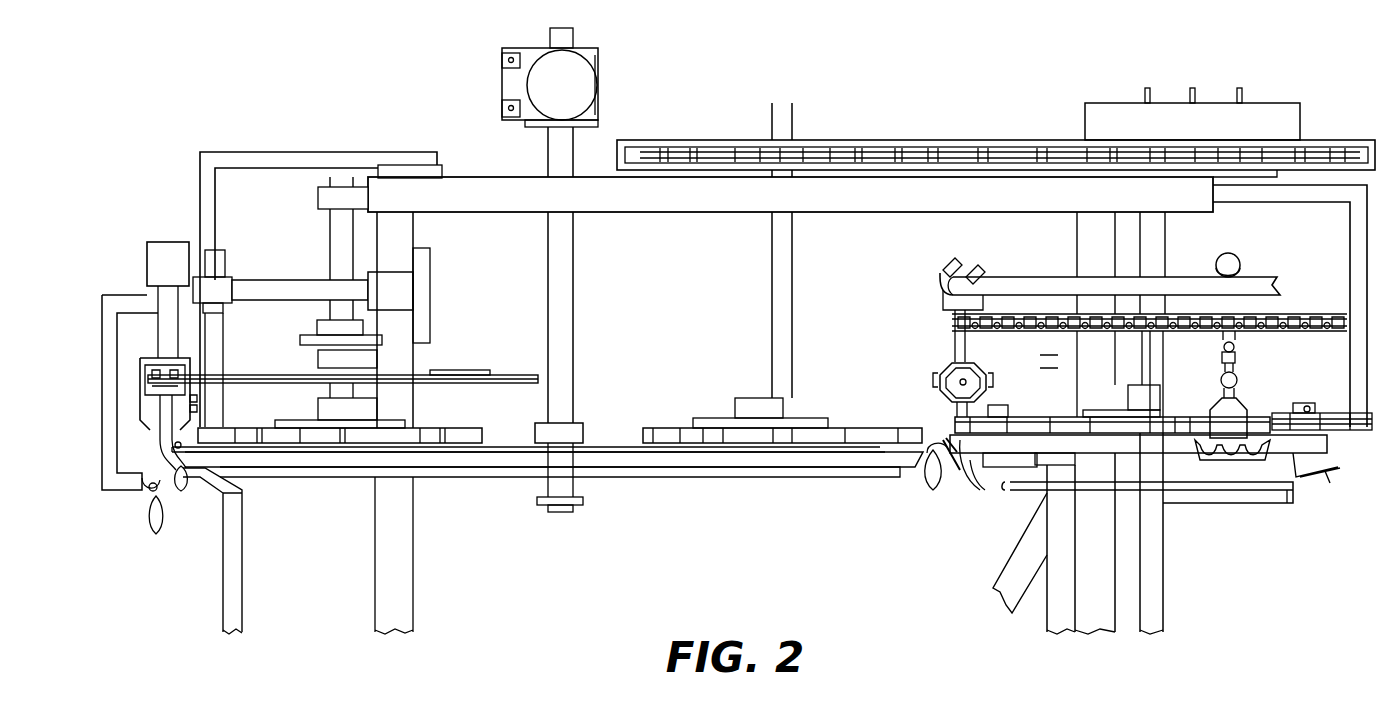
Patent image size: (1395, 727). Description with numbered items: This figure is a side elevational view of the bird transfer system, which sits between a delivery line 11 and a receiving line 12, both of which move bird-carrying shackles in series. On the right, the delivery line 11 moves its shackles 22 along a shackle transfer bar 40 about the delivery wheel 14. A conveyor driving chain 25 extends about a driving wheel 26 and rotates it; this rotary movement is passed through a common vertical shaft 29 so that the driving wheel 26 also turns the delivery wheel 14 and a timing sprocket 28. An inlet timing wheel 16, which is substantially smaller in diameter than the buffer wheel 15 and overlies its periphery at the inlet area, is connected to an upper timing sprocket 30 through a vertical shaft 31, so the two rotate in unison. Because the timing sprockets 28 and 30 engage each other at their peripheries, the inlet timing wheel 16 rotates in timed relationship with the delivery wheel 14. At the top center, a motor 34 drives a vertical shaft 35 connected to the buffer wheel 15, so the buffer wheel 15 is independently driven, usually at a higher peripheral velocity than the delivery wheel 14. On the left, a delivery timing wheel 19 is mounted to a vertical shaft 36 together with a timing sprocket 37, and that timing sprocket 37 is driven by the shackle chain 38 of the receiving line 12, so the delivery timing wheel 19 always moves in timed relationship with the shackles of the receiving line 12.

The delivery line 11 is at (1244, 252).
The receiving line 12 is at (136, 213).
The delivery wheel 14 is at (1073, 423).
The buffer wheel 15 is at (797, 472).
The inlet timing wheel 16 is at (910, 432).
The delivery timing wheel 19 is at (467, 432).
The shackles 22 is at (1233, 413).
The conveyor driving chain 25 is at (1293, 312).
The driving wheel 26 is at (1045, 325).
The timing sprocket 28 is at (1333, 152).
The common vertical shaft 29 is at (1155, 238).
The upper timing sprocket 30 is at (858, 157).
The vertical shaft 31 is at (780, 330).
The motor 34 is at (568, 65).
The vertical shaft 35 is at (560, 288).
The vertical shaft 36 is at (340, 252).
The timing sprocket 37 is at (452, 368).
The shackle chain 38 is at (139, 362).
The shackle transfer bar 40 is at (1267, 277).